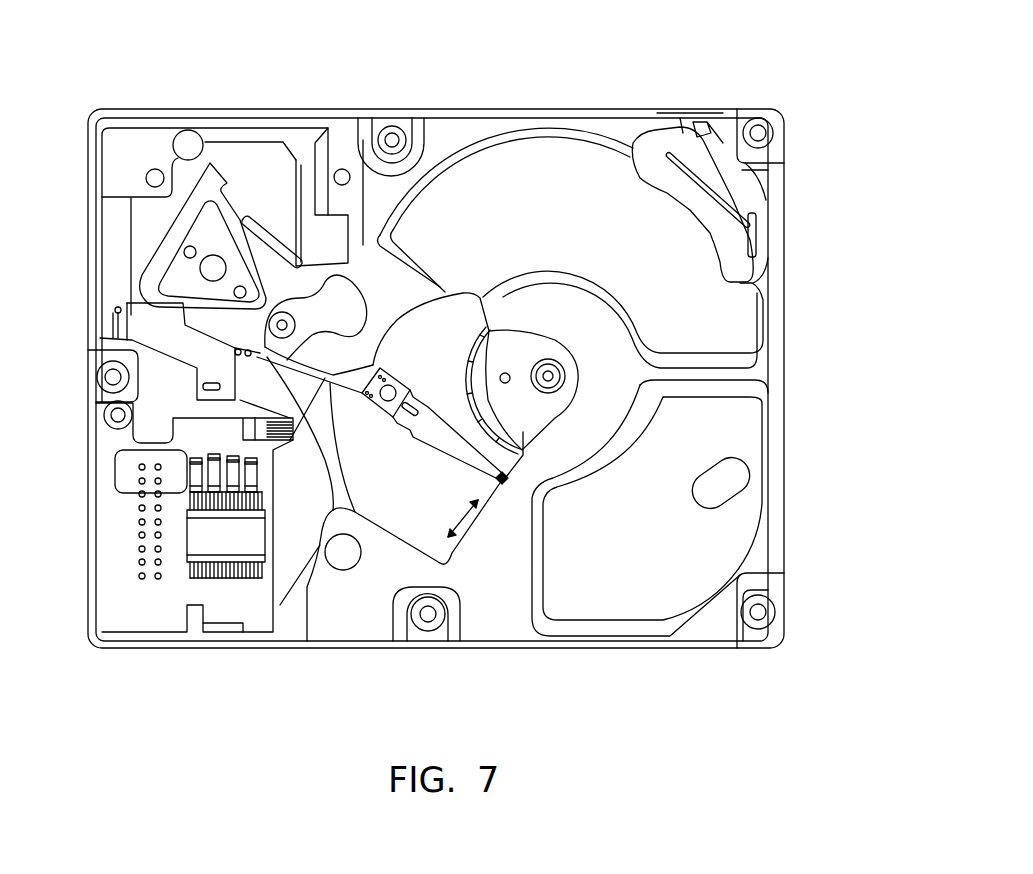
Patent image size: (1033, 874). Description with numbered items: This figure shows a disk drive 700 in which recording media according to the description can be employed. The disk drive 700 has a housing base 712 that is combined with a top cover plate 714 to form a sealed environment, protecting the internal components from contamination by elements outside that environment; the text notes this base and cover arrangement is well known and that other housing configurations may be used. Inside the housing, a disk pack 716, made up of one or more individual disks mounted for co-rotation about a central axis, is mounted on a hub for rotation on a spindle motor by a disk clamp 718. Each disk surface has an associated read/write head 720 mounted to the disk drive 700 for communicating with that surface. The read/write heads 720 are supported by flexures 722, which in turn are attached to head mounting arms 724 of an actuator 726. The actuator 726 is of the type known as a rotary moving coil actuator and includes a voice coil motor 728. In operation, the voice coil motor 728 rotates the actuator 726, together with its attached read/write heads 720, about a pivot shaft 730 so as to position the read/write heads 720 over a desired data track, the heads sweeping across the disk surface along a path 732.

The disk drive 700 is at (103, 42).
The housing base 712 is at (223, 649).
The top cover plate 714 is at (773, 370).
The disk pack 716 is at (405, 517).
The disk clamp 718 is at (562, 402).
The read/write head 720 is at (500, 482).
The flexure 722 is at (453, 445).
The head mounting arm 724 is at (130, 340).
The actuator 726 is at (332, 300).
The voice coil motor 728 is at (268, 160).
The pivot shaft 730 is at (280, 325).
The path 732 is at (468, 520).